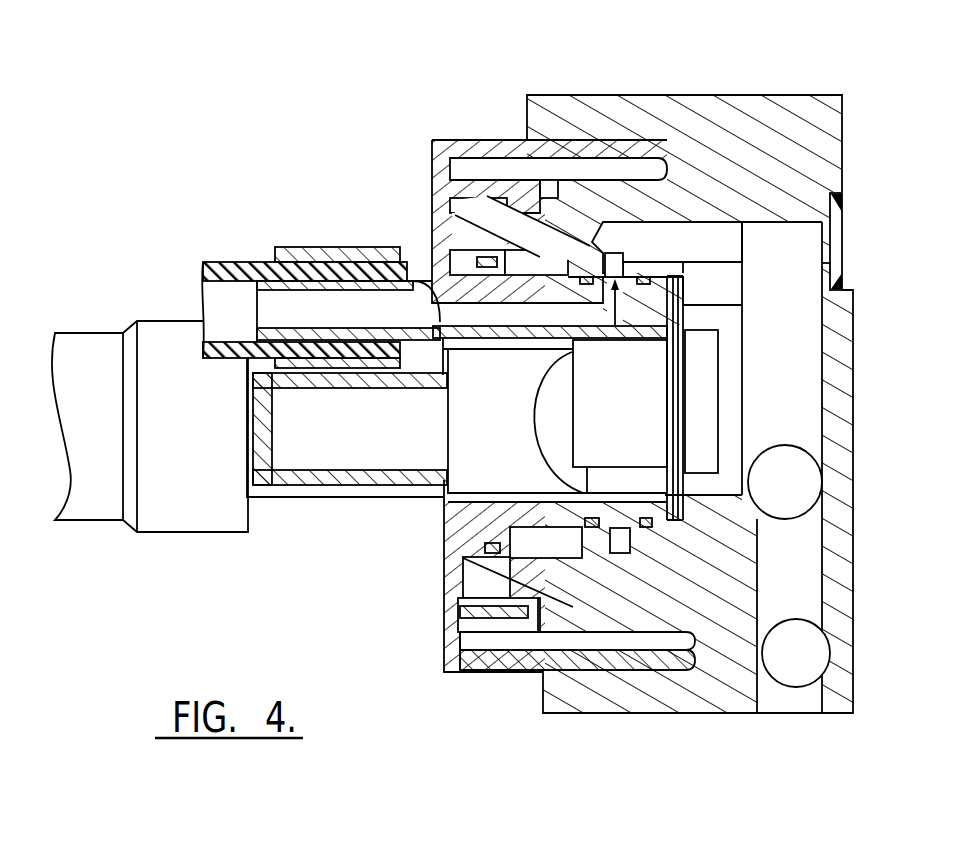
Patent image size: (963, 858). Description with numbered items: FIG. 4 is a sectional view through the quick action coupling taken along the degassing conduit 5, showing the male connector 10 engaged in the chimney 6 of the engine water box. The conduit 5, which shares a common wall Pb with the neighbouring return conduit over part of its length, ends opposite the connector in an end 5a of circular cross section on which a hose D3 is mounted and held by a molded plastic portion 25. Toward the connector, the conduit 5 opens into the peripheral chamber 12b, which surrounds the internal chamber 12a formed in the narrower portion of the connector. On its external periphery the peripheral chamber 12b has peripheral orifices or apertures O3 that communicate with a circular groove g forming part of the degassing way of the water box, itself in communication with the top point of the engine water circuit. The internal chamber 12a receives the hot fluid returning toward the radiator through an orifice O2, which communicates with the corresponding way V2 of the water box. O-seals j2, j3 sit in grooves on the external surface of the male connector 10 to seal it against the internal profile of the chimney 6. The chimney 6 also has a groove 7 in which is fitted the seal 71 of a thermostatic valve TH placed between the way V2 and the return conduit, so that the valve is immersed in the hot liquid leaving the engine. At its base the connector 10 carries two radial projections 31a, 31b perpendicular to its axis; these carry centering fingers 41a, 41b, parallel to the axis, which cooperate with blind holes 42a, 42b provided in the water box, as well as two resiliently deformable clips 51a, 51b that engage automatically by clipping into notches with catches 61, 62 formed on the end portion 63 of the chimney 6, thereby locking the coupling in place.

The chimney 6 is at (833, 160).
The blind hole 42a is at (680, 150).
The blind hole 42b is at (690, 637).
The centering finger 41a is at (497, 158).
The centering finger 41b is at (517, 673).
The clip 51a is at (482, 178).
The clip 51b is at (497, 665).
The radial projection 31a is at (438, 188).
The radial projection 31b is at (438, 597).
The common wall Pb is at (500, 322).
The catch 61 is at (558, 292).
The male connector 10 is at (558, 292).
The circular groove g is at (618, 245).
The groove 7 is at (683, 263).
The seal 71 is at (683, 293).
The internal chamber 12a is at (490, 378).
The peripheral chamber 12b is at (472, 322).
The peripheral orifices O3 is at (632, 342).
The orifice O2 is at (658, 381).
The diaphragm TH is at (660, 448).
The way V2 is at (789, 509).
The O-seal j2 is at (580, 558).
The O-seal j3 is at (633, 557).
The catch 62 is at (460, 640).
The end portion 63 is at (478, 613).
The conduit end 5a is at (278, 305).
The molded portion 25 is at (313, 247).
The conduit 5 is at (357, 305).
The hose D3 is at (205, 280).